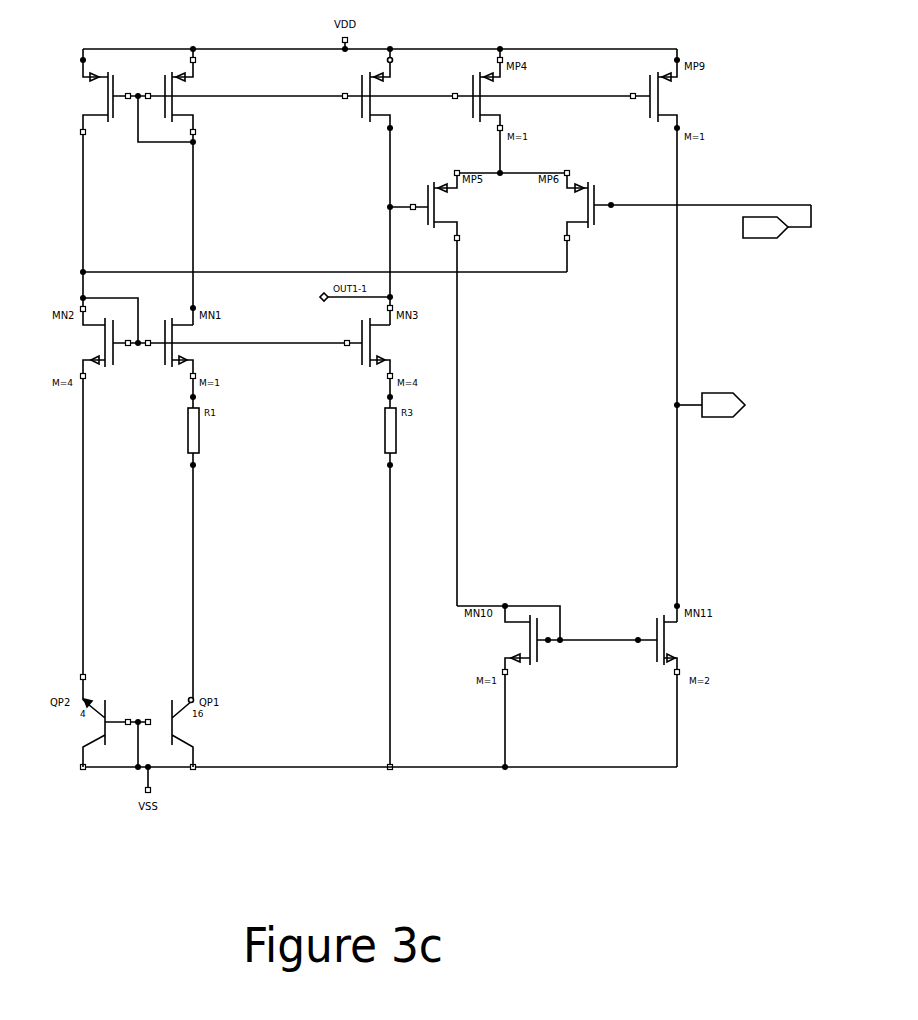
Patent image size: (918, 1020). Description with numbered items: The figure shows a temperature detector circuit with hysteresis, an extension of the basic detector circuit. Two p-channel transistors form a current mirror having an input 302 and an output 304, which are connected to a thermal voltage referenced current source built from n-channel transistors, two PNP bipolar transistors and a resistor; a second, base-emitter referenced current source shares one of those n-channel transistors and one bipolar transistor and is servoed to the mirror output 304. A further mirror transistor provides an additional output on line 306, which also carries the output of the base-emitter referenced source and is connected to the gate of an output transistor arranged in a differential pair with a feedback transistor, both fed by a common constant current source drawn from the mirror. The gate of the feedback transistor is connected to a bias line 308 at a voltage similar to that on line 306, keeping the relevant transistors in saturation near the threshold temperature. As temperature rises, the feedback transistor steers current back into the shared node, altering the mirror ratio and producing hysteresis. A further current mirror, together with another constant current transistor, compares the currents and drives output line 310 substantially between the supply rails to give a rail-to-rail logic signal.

The current mirror input 302 is at (193, 197).
The current mirror output 304 is at (83, 197).
The additional current mirror output line 306 is at (390, 194).
The bias line 308 is at (811, 205).
The output line 310 is at (718, 392).